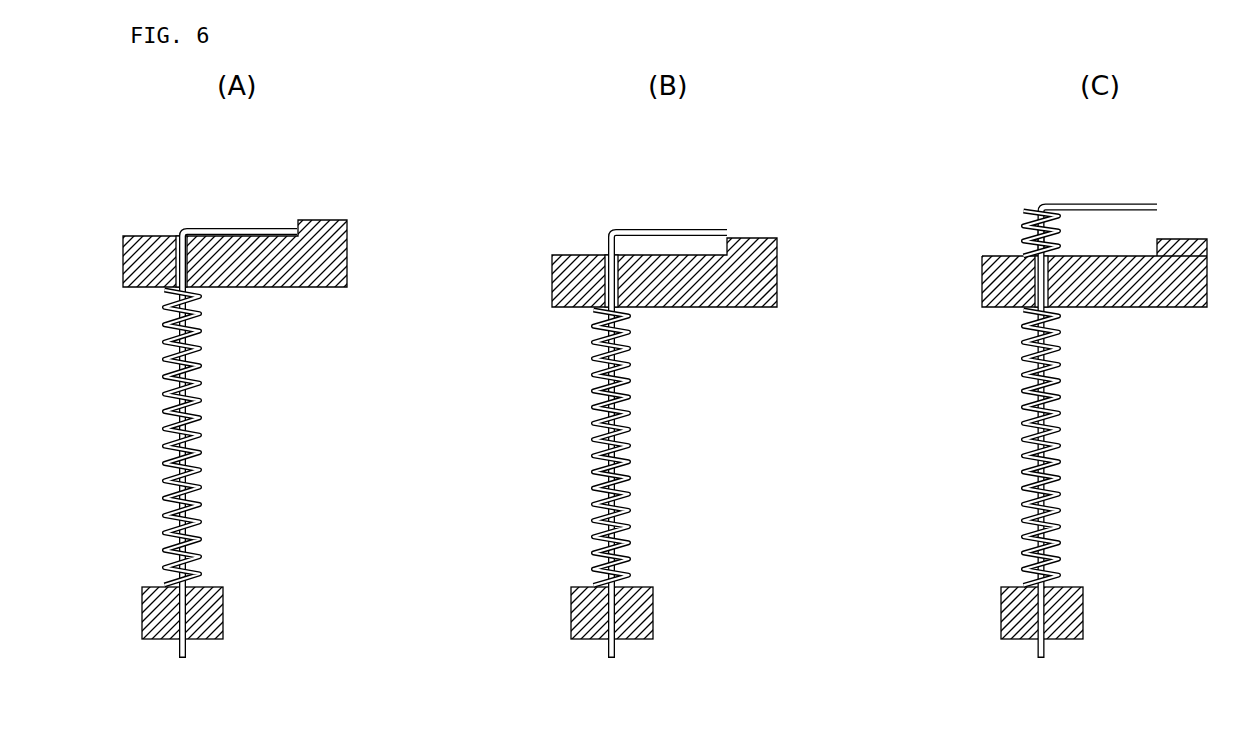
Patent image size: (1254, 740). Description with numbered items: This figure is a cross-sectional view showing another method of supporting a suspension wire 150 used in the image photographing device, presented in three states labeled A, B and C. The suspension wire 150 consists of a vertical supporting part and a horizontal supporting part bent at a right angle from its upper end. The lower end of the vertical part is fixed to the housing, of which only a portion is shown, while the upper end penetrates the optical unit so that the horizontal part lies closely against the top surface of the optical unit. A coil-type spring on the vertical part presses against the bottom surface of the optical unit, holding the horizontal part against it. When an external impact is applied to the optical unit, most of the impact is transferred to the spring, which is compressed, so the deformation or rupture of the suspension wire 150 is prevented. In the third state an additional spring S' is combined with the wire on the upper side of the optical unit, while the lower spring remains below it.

The suspension wire 150 is at (150, 158).
The spring S' is at (1009, 233).